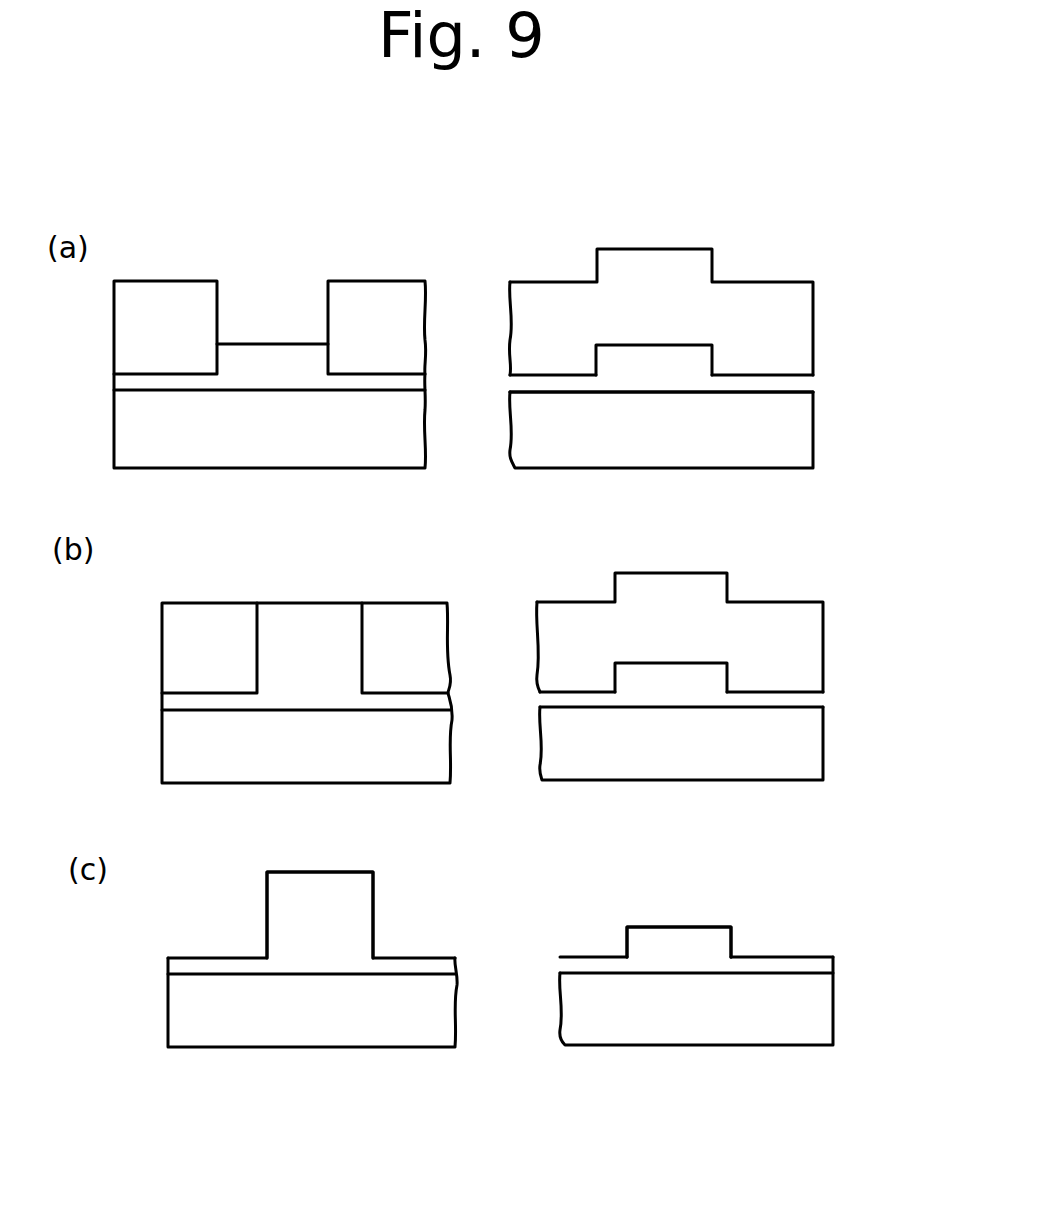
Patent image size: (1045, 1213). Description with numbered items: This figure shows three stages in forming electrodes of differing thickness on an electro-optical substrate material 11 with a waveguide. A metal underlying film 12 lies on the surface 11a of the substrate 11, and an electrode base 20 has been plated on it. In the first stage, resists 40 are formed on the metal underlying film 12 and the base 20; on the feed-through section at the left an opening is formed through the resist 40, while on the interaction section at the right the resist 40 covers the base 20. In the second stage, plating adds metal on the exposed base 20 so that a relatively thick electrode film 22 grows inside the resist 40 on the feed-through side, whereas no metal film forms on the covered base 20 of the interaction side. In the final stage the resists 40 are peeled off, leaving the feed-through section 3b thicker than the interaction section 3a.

The resist 40 is at (170, 293).
The electrode base 20 is at (263, 360).
The electrode film 22 is at (344, 613).
The metal underlying film 12 is at (785, 383).
The surface of the substrate 11a is at (802, 392).
The substrate material 11 is at (800, 442).
The feed-through section 3b is at (378, 880).
The interaction section 3a is at (672, 928).